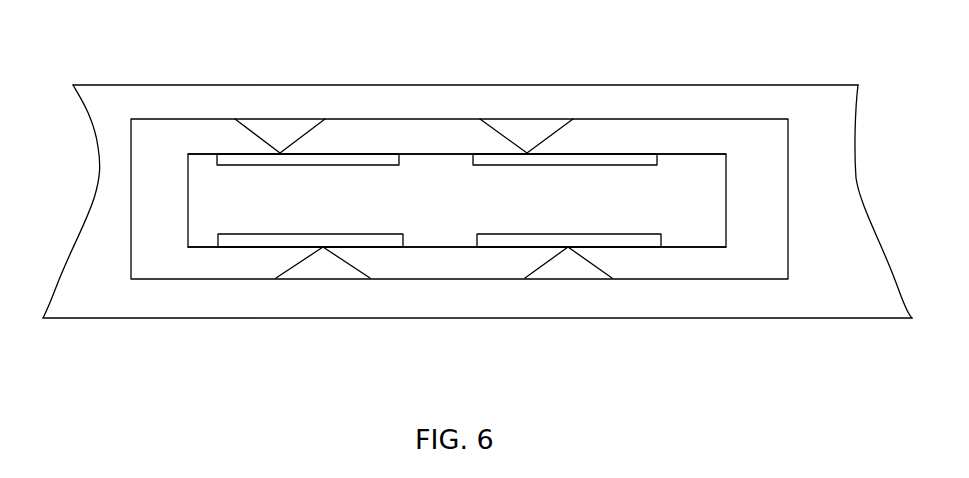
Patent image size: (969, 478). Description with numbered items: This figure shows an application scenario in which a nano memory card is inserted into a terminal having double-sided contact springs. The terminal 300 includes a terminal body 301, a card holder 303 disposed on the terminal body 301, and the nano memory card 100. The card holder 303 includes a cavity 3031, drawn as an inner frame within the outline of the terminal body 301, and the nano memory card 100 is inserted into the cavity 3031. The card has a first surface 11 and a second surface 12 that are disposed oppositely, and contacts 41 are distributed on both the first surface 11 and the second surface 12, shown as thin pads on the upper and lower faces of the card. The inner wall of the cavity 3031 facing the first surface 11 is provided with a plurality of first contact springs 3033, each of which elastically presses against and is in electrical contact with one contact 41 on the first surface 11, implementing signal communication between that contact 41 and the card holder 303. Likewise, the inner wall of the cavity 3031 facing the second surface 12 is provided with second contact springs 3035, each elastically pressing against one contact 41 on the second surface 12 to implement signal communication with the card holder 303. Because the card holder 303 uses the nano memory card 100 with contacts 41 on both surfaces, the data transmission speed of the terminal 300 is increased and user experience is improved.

The terminal 300 is at (492, 21).
The nano memory card 100 is at (610, 119).
The terminal body 301 is at (165, 102).
The card holder 303 is at (131, 213).
The cavity 3031 is at (145, 192).
The second contact spring 3035 is at (292, 123).
The first contact spring 3033 is at (323, 272).
The second surface 12 is at (408, 153).
The first surface 11 is at (210, 247).
The contact 41 is at (387, 236).